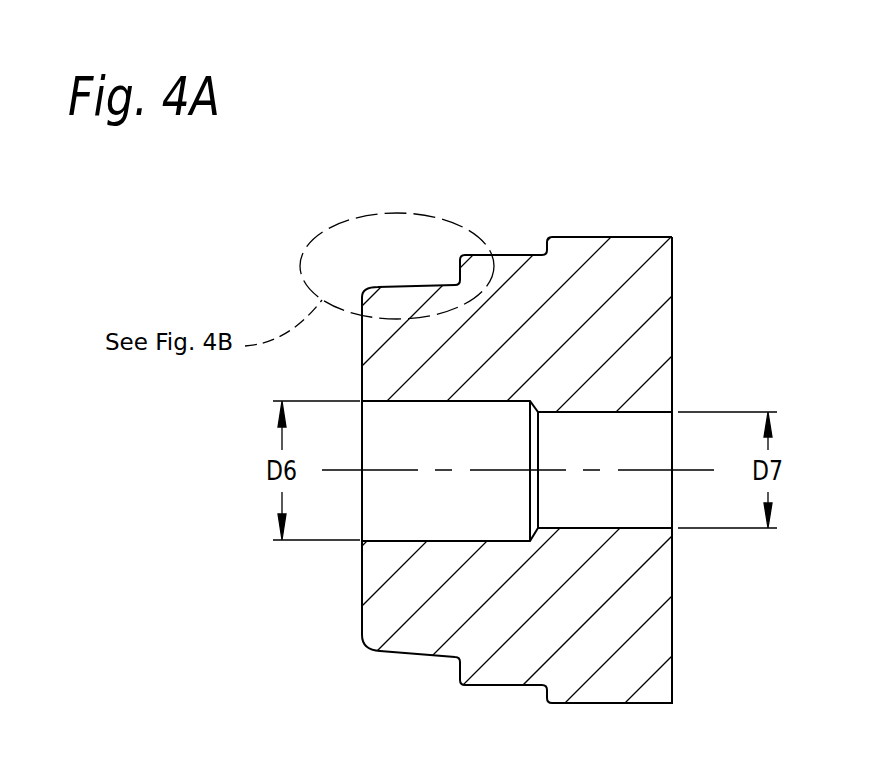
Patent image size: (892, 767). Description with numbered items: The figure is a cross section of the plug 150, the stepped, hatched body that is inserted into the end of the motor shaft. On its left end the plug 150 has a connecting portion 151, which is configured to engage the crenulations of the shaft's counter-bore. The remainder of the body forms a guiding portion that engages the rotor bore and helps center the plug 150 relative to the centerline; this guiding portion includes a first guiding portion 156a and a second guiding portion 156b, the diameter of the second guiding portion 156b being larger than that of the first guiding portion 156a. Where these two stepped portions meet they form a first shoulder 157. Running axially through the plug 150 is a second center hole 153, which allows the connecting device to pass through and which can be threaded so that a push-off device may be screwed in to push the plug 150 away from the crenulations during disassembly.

The plug 150 is at (673, 320).
The connecting portion 151 is at (415, 655).
The second center hole 153 is at (635, 427).
The first guiding portion 156a is at (515, 254).
The second guiding portion 156b is at (655, 235).
The first shoulder 157 is at (527, 254).